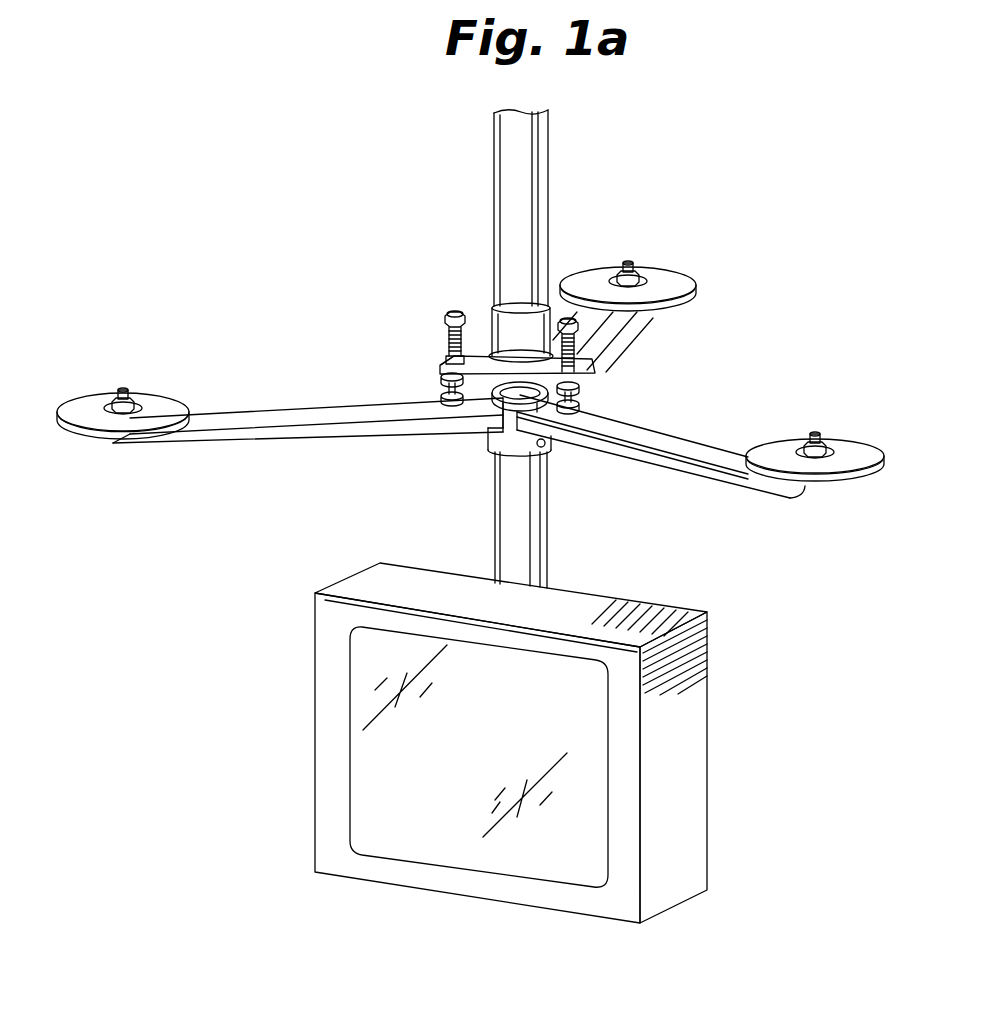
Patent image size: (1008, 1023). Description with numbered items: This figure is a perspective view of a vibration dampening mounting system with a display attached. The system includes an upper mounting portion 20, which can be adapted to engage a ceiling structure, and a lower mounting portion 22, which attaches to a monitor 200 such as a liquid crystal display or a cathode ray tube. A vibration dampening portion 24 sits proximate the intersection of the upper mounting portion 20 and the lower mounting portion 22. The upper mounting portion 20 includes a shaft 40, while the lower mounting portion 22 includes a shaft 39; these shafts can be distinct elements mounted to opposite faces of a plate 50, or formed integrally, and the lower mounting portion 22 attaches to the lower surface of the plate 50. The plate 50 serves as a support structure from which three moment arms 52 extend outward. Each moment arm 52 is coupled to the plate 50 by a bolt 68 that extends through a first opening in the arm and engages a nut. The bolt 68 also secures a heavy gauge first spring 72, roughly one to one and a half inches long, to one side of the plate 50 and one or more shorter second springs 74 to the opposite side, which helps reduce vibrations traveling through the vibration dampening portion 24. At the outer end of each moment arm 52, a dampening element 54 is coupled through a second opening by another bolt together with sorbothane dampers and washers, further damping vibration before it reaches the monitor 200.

The upper mounting portion 20 is at (562, 199).
The shaft 40 is at (533, 182).
The plate 50 is at (483, 340).
The bolt 68 is at (448, 312).
The first spring 72 is at (447, 345).
The second spring 74 is at (442, 385).
The vibration dampening portion 24 is at (472, 359).
The moment arm 52 is at (215, 440).
The dampening element 54 is at (110, 405).
The lower mounting portion 22 is at (558, 520).
The shaft 39 is at (533, 557).
The monitor 200 is at (700, 738).